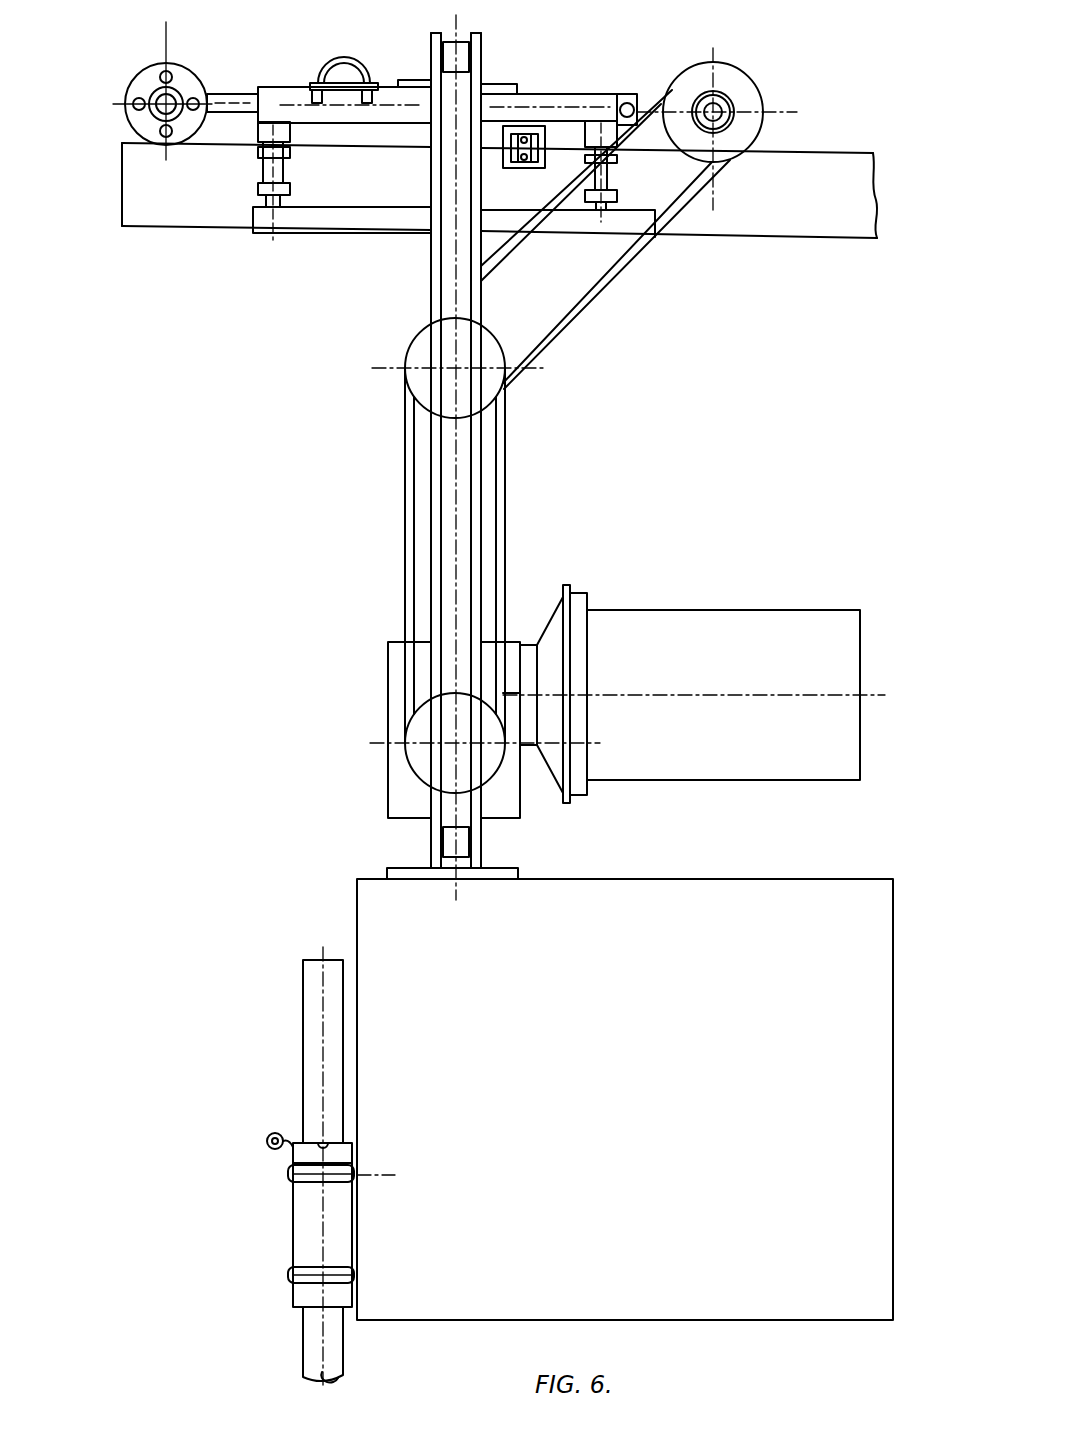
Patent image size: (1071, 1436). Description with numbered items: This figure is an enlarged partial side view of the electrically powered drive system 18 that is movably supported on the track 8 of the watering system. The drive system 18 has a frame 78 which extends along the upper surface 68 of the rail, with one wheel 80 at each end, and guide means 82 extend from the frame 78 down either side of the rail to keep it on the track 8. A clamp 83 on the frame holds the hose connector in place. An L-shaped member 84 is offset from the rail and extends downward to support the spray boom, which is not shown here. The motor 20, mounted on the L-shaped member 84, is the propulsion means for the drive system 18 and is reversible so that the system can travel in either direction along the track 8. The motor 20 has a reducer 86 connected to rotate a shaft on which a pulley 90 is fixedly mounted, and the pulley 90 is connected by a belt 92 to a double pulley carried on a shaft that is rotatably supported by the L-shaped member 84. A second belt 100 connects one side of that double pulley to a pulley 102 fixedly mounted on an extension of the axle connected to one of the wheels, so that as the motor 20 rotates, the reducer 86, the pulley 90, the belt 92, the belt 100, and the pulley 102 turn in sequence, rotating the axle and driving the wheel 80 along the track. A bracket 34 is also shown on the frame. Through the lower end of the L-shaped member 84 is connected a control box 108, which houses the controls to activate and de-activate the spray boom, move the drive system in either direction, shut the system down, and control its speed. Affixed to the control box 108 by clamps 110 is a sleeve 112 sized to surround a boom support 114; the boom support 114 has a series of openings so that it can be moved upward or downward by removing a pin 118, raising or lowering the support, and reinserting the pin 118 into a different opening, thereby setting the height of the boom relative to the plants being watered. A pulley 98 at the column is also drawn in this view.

The track 8 is at (823, 218).
The drive system 18 is at (603, 88).
The motor 20 is at (750, 620).
The mounting bracket 34 is at (527, 135).
The upper surface 68 is at (818, 153).
The frame 78 is at (520, 98).
The wheel 80 is at (183, 67).
The guide means 82 is at (265, 190).
The clamp 83 is at (333, 58).
The L-shaped member 84 is at (448, 244).
The reducer 86 is at (552, 635).
The pulley 90 is at (420, 755).
The belt 92 is at (408, 550).
The upper pulley 98 is at (413, 358).
The belt 100 is at (633, 255).
The pulley 102 is at (732, 75).
The control box 108 is at (725, 898).
The clamps 110 is at (290, 1175).
The sleeve 112 is at (300, 1228).
The boom support 114 is at (305, 982).
The pin 118 is at (267, 1138).